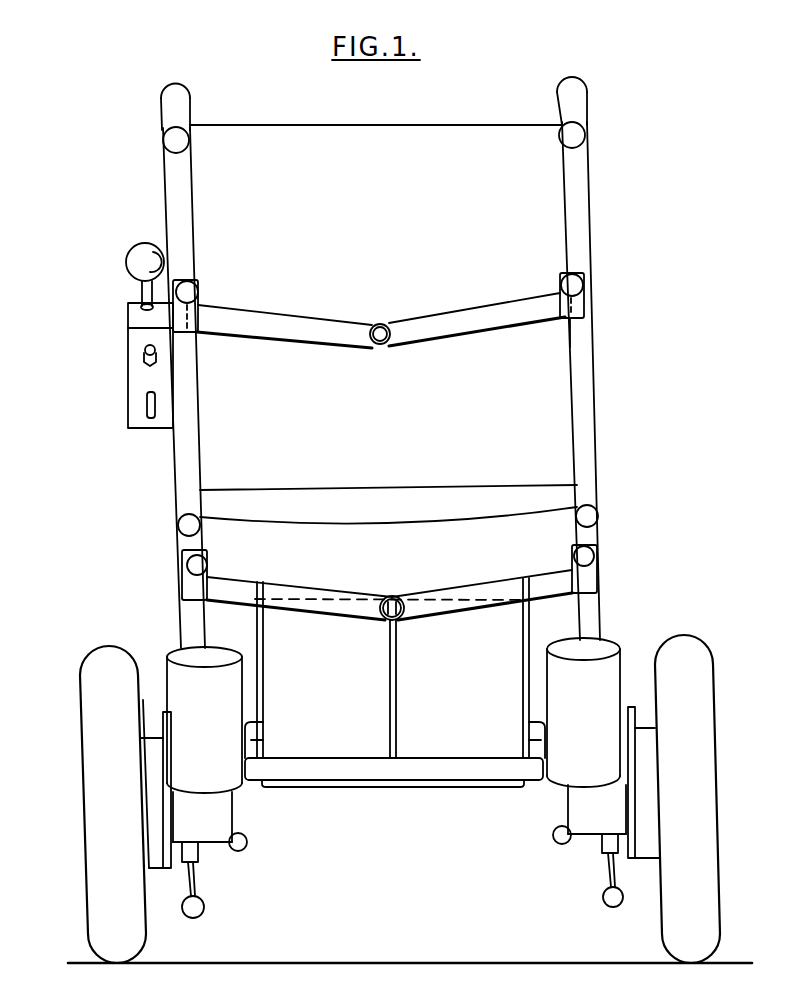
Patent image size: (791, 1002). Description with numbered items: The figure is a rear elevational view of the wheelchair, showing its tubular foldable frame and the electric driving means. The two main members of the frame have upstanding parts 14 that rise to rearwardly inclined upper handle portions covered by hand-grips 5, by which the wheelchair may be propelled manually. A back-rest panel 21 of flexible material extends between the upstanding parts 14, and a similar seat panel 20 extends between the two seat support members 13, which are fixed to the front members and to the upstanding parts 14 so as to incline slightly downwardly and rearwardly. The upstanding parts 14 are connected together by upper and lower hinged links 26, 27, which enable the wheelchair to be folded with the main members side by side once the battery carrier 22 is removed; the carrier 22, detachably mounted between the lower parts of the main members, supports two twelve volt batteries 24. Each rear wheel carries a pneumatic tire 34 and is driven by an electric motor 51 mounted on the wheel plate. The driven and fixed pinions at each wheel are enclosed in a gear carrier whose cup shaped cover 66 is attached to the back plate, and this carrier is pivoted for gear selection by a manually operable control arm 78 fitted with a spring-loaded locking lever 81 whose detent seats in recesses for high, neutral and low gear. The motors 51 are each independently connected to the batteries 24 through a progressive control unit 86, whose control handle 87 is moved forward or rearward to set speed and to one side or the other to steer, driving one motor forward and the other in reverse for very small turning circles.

The hand-grip 5 is at (184, 105).
The seat support member 13 is at (598, 518).
The upstanding part 14 is at (584, 362).
The seat panel 20 is at (388, 500).
The back-rest panel 21 is at (355, 140).
The carrier 22 is at (402, 787).
The battery 24 is at (478, 670).
The upper hinged link 26 is at (481, 322).
The lower hinged link 27 is at (538, 586).
The pneumatic tire 34 is at (674, 648).
The electric motor 51 is at (222, 713).
The cup shaped cover 66 is at (150, 755).
The control arm 78 is at (204, 907).
The locking lever 81 is at (247, 843).
The progressive control unit 86 is at (150, 378).
The control handle 87 is at (143, 256).